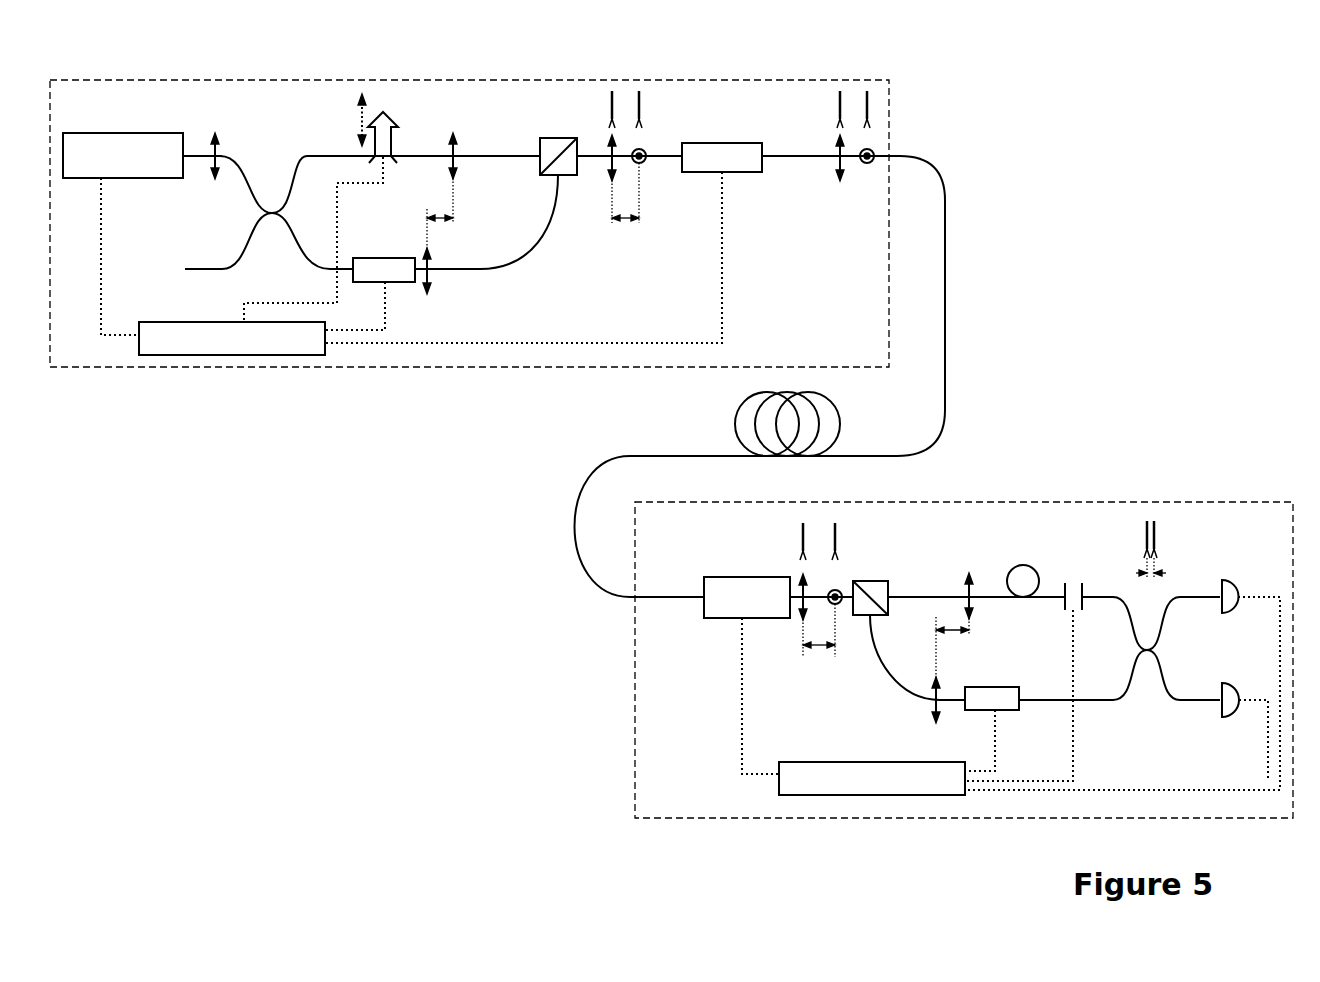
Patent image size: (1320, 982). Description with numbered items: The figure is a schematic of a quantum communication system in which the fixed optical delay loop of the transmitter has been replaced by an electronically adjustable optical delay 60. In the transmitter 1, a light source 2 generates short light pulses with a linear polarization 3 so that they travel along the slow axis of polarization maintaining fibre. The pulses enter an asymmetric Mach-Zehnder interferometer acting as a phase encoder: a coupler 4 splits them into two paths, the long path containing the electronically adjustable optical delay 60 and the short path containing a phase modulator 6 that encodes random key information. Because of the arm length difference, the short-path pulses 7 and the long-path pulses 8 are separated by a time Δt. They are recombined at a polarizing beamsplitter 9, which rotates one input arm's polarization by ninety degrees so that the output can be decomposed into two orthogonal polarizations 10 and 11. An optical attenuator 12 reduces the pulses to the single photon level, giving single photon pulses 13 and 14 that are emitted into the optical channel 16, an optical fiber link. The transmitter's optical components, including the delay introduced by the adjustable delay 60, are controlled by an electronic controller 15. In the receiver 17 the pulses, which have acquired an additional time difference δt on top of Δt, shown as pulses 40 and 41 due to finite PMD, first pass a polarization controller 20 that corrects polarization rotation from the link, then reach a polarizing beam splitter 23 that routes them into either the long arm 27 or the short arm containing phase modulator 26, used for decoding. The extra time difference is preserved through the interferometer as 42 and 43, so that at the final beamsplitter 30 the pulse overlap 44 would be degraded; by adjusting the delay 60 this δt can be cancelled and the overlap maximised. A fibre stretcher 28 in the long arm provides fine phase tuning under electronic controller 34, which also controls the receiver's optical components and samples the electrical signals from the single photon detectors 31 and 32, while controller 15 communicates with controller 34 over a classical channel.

The transmitter 1 is at (469, 244).
The light source 2 is at (142, 135).
The linear polarization 3 is at (201, 135).
The coupler 4 is at (269, 221).
The phase modulator 6 is at (441, 252).
The light pulses following the short path 7 is at (423, 235).
The light pulses following the long path 8 is at (439, 159).
The polarizing beamsplitter 9 is at (604, 139).
The orthogonal polarization 10 is at (604, 143).
The orthogonal polarization 11 is at (623, 127).
The optical attenuator 12 is at (543, 225).
The single photon pulse 13 is at (820, 114).
The single photon pulse 14 is at (851, 96).
The electronic controller 15 is at (213, 266).
The optical channel 16 is at (760, 376).
The receiver 17 is at (964, 677).
The polarization controller 20 is at (776, 657).
The polarizing beam splitter 23 is at (959, 640).
The phase modulator 26 is at (1039, 729).
The long arm 27 is at (1009, 565).
The fibre stretcher 28 is at (1039, 653).
The final beamsplitter 30 is at (1166, 672).
The single photon detector 31 is at (1122, 666).
The single photon detector 32 is at (1245, 732).
The electronic controller 34 is at (872, 758).
The light pulse with time difference Δt plus δt 40 is at (801, 581).
The light pulse with time difference Δt plus δt 41 is at (818, 564).
The preserved time difference δt 42 is at (954, 687).
The preserved time difference δt 43 is at (955, 601).
The pulse overlap 44 is at (1135, 533).
The electronically adjustable optical delay 60 is at (392, 179).